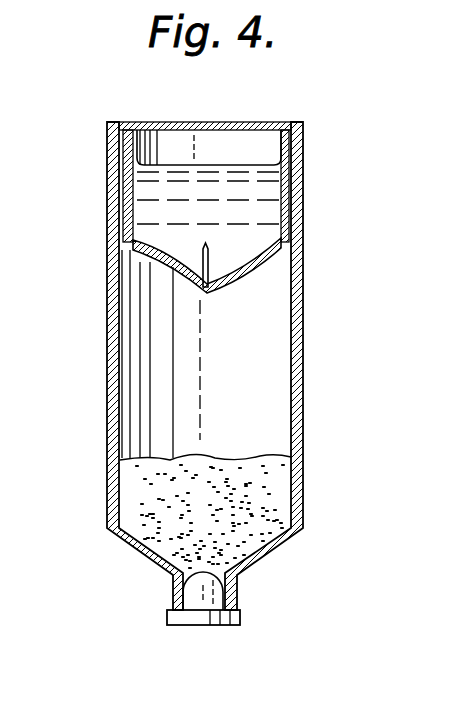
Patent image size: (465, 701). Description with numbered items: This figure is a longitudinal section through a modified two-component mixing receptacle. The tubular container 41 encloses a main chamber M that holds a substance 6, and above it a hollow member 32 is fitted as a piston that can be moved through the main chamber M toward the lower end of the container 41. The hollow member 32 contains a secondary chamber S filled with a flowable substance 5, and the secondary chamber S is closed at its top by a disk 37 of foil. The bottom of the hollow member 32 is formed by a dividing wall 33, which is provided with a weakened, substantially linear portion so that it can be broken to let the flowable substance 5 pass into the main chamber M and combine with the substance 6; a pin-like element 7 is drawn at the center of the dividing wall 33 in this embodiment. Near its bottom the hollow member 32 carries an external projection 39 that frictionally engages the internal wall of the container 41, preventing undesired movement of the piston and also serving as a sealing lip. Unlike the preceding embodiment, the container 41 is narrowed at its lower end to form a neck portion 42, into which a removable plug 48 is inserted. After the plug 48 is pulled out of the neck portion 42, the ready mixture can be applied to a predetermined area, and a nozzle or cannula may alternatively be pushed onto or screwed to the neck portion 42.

The flowable substance 5 is at (263, 192).
The substance 6 is at (267, 492).
The piercing pin 7 is at (200, 259).
The hollow member 32 is at (118, 205).
The dividing wall 33 is at (242, 268).
The disk of foil 37 is at (163, 121).
The external projection 39 is at (285, 248).
The container 41 is at (304, 362).
The neck portion 42 is at (173, 592).
The removable plug 48 is at (200, 617).
The main chamber m is at (173, 400).
The secondary chamber S is at (238, 150).